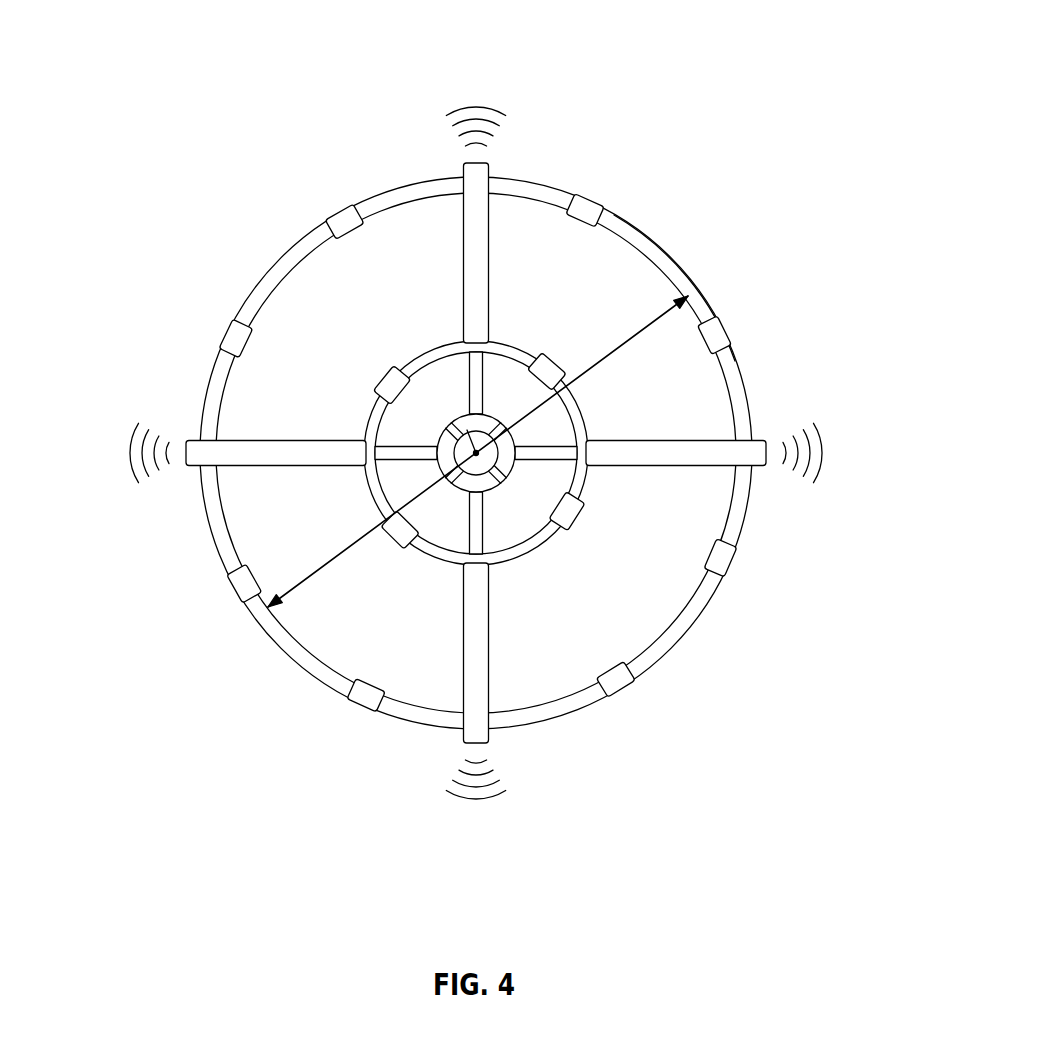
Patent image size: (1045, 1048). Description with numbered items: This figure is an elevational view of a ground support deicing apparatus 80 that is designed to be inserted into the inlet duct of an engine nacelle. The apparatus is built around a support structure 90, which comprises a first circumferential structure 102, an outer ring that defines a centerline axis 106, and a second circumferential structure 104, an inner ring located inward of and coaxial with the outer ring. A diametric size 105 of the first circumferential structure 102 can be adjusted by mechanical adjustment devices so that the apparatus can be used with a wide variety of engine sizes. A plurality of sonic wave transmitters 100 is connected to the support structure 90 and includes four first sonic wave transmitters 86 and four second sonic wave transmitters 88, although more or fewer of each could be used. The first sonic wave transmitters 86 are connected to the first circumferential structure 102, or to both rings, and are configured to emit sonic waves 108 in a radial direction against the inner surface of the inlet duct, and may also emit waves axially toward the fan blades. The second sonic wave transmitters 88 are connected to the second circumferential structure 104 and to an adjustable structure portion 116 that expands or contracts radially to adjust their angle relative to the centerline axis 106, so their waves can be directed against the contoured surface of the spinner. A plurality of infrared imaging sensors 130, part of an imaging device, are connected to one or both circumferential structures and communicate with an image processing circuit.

The ground support deicing apparatus 80 is at (485, 465).
The first sonic wave transmitters 86 is at (466, 230).
The second sonic wave transmitters 88 is at (467, 390).
The support structure 90 is at (636, 214).
The sonic wave transmitters 100 is at (483, 262).
The first circumferential structure 102 is at (704, 284).
The second circumferential structure 104 is at (512, 340).
The diametric size 105 is at (272, 597).
The centerline axis 106 is at (461, 422).
The sonic waves 108 is at (483, 92).
The adjustable structure portion 116 is at (494, 488).
The infrared imaging sensors 130 is at (343, 212).